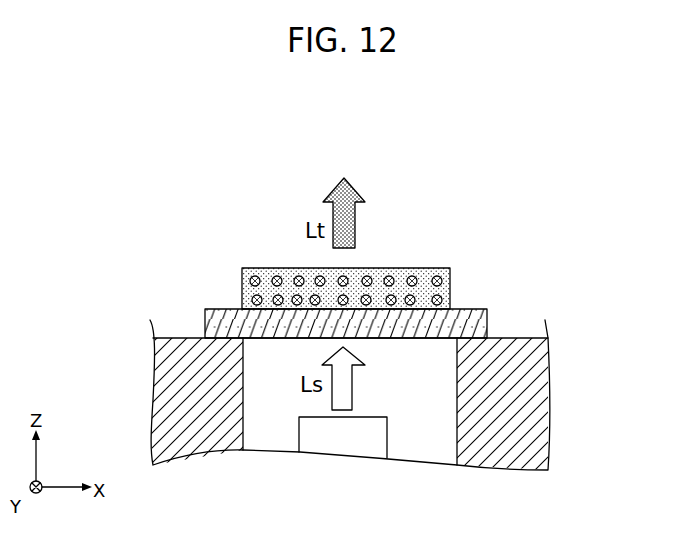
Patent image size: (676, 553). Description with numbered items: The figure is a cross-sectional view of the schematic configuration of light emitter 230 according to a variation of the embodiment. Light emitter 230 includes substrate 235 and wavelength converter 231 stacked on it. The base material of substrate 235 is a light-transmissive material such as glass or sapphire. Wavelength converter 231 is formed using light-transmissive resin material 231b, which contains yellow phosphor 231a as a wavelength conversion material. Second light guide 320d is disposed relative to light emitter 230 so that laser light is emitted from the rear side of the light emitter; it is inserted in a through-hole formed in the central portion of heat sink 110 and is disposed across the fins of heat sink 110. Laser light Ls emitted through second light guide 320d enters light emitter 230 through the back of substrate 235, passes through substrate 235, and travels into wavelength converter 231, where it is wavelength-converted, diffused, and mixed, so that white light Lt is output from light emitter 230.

The light emitter 230 is at (321, 239).
The wavelength converter 231 is at (381, 225).
The yellow phosphor 231a is at (348, 247).
The light-transmissive resin material 231b is at (425, 292).
The substrate 235 is at (226, 309).
The second light guide 320d is at (388, 433).
The heat sink 110 is at (514, 391).